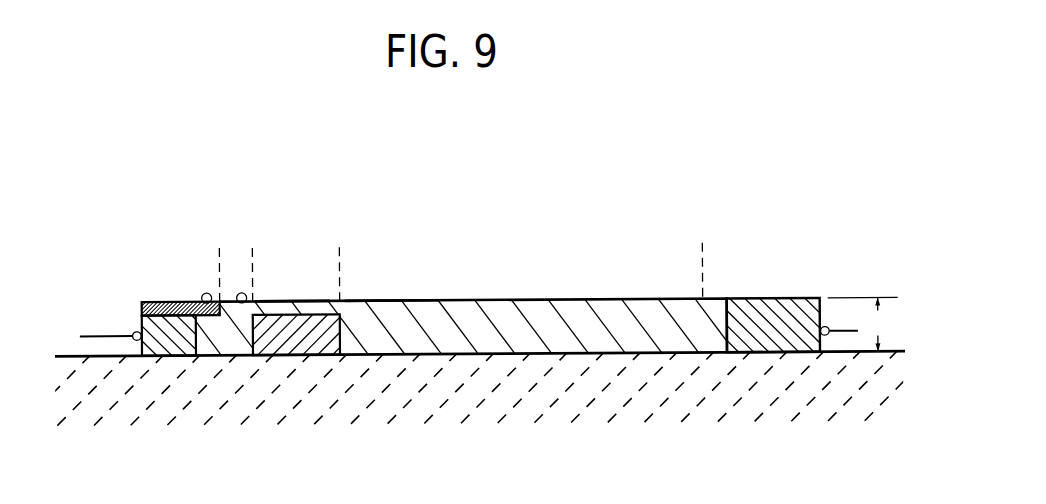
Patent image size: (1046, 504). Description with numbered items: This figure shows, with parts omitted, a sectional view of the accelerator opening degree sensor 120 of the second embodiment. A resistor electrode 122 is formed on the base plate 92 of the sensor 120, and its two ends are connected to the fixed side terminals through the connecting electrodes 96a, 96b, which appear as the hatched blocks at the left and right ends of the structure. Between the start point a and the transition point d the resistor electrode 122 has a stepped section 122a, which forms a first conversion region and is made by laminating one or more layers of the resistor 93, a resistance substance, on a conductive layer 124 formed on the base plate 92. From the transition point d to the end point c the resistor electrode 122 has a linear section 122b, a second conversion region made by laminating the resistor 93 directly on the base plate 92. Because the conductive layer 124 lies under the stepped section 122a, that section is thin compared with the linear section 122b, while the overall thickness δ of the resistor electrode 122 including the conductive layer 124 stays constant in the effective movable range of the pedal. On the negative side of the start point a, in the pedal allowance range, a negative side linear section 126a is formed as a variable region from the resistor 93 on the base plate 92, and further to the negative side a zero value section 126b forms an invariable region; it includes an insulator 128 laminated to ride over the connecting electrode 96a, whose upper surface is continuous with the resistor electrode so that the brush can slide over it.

The accelerator opening degree sensor 120 is at (620, 141).
The resistor electrode 122 is at (458, 301).
The stepped section 122a is at (287, 300).
The linear section 122b is at (390, 300).
The conductive layer 124 is at (303, 332).
The negative side linear section 126a is at (244, 305).
The zero value section 126b is at (214, 313).
The insulator 128 is at (157, 300).
The connecting electrode 96a is at (160, 328).
The connecting electrode 96b is at (773, 310).
The base plate 92 is at (778, 385).
The resistor 93 is at (463, 333).